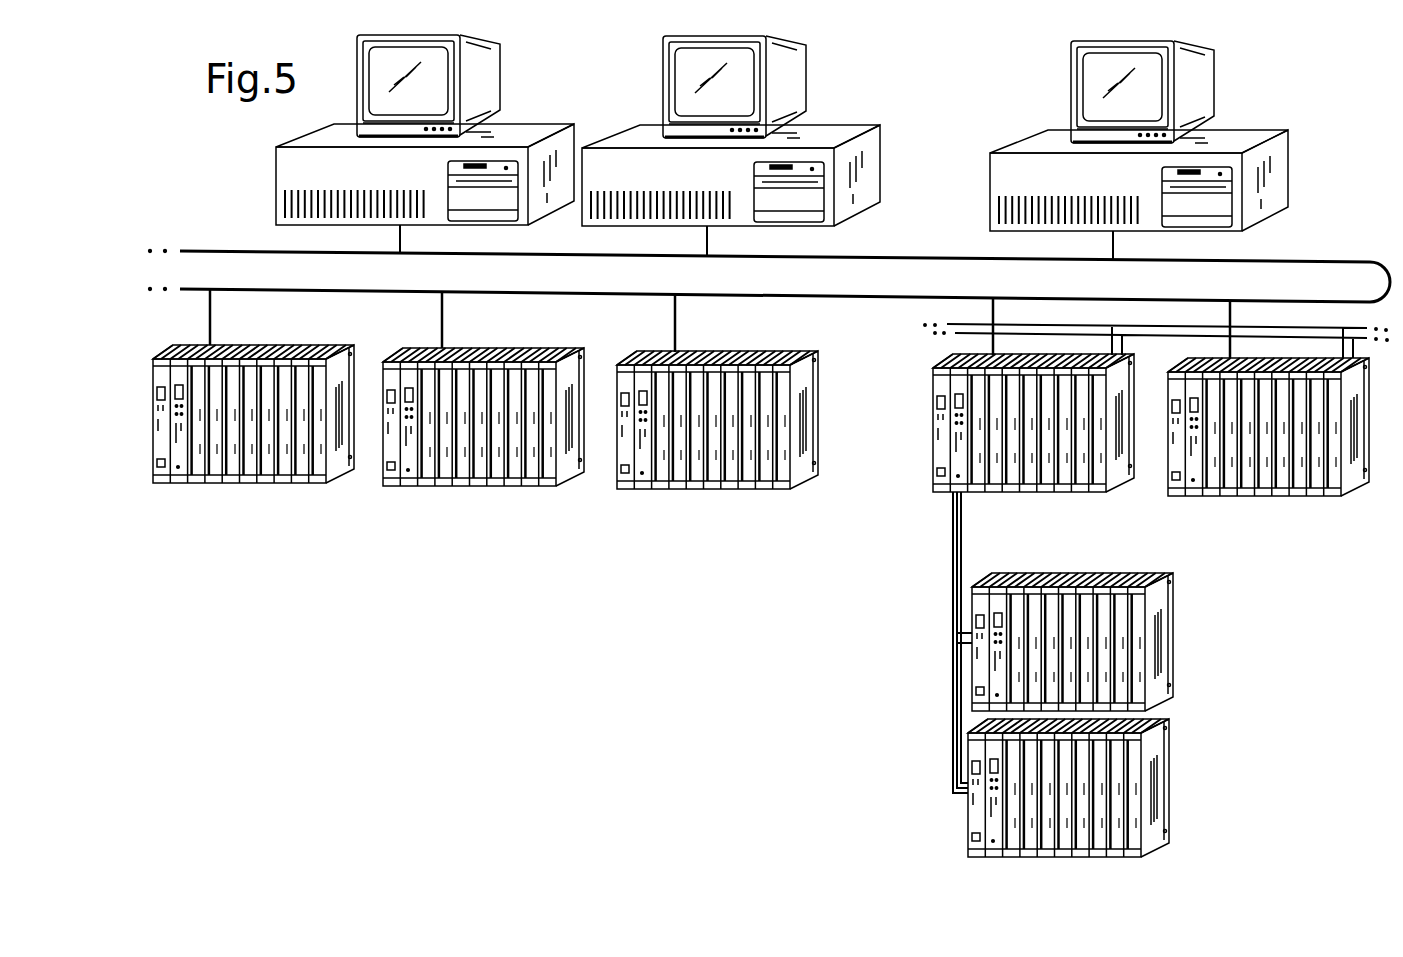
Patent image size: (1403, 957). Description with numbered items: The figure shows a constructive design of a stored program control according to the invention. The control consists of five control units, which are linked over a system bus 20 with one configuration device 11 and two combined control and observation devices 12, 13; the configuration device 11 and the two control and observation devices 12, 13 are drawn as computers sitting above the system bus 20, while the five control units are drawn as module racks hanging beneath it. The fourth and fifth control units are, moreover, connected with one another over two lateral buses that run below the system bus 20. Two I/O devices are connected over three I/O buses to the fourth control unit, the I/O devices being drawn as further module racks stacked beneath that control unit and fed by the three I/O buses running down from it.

The configuration device 11 is at (1293, 208).
The combined control and observation device 12 is at (276, 183).
The combined control and observation device 13 is at (872, 212).
The system bus 20 is at (562, 293).